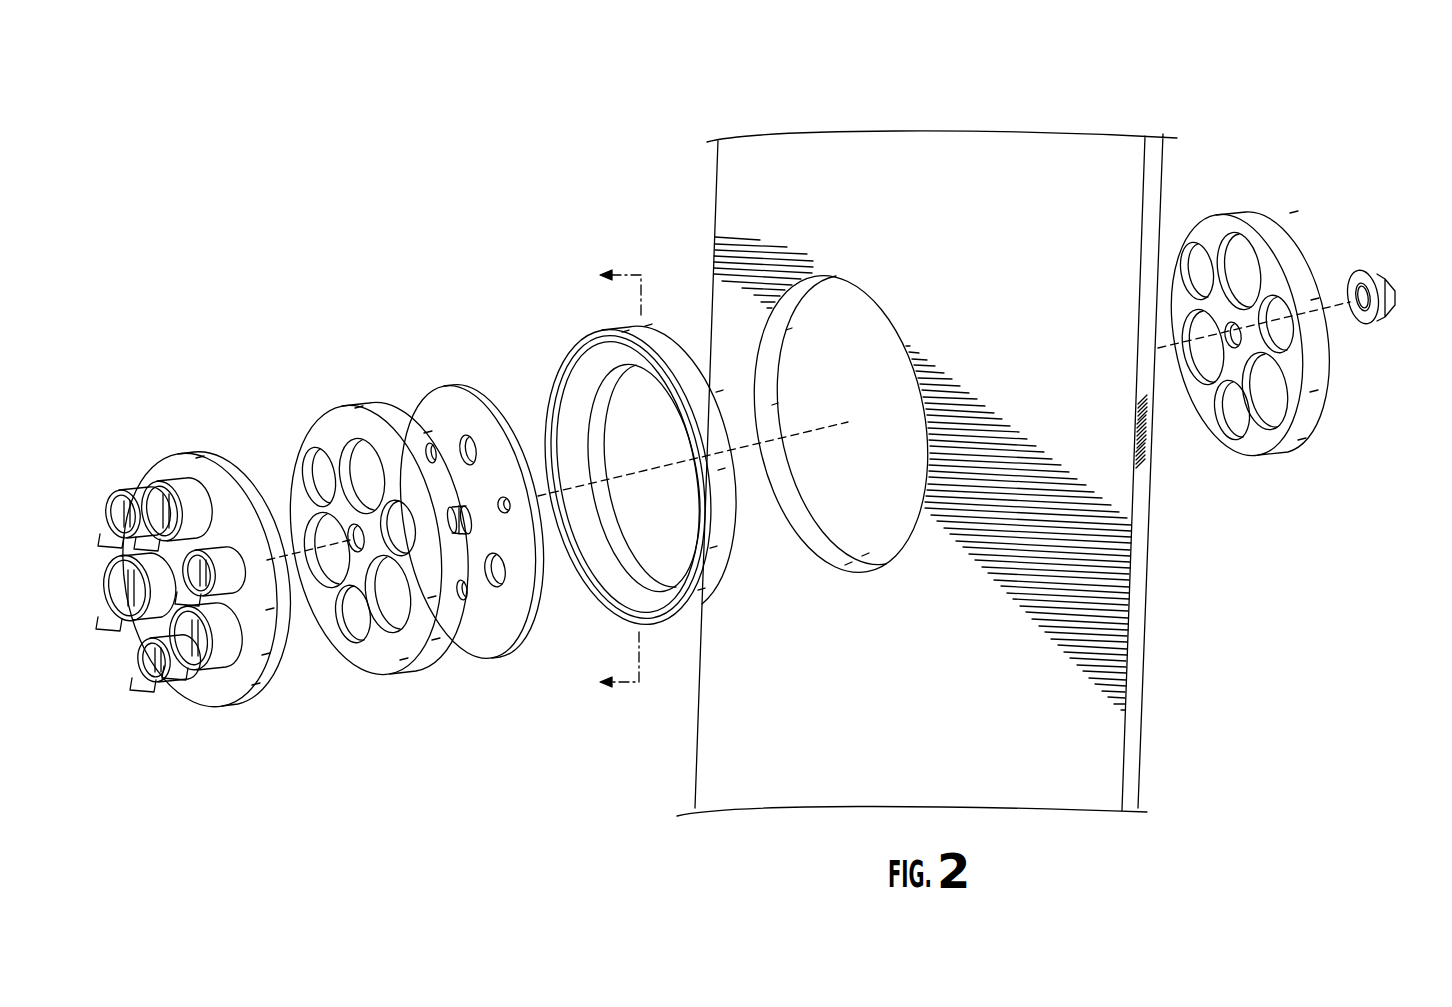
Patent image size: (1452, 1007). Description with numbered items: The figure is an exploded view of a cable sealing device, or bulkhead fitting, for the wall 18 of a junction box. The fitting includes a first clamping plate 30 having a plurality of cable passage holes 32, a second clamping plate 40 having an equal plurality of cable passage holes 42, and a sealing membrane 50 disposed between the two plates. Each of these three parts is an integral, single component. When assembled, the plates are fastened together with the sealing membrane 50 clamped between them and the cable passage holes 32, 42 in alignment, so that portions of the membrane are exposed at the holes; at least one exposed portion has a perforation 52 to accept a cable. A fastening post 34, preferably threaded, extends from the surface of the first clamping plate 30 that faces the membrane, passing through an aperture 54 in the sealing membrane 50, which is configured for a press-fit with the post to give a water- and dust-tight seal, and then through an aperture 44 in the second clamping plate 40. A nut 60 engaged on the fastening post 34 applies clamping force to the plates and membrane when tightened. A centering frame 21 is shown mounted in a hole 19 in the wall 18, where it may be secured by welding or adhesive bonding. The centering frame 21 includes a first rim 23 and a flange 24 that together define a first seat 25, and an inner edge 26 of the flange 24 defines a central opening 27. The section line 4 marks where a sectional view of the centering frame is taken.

The section line 4- 4 is at (610, 478).
The wall 18 is at (927, 449).
The hole 19 is at (813, 545).
The centering frame 21 is at (733, 565).
The first rim 23 is at (723, 493).
The flange 24 is at (598, 388).
The first seat 25 is at (600, 366).
The inner edge 26 is at (613, 435).
The central opening 27 is at (650, 466).
The first clamping plate 30 is at (362, 568).
The cable passage holes 32 is at (138, 490).
The fastening post 34 is at (463, 536).
The second clamping plate 40 is at (1260, 323).
The cable passage holes 42 is at (1262, 412).
The aperture 44 is at (1243, 333).
The sealing membrane 50 is at (472, 522).
The perforation 52 is at (494, 587).
The aperture 54 is at (352, 527).
The nut 60 is at (1395, 286).